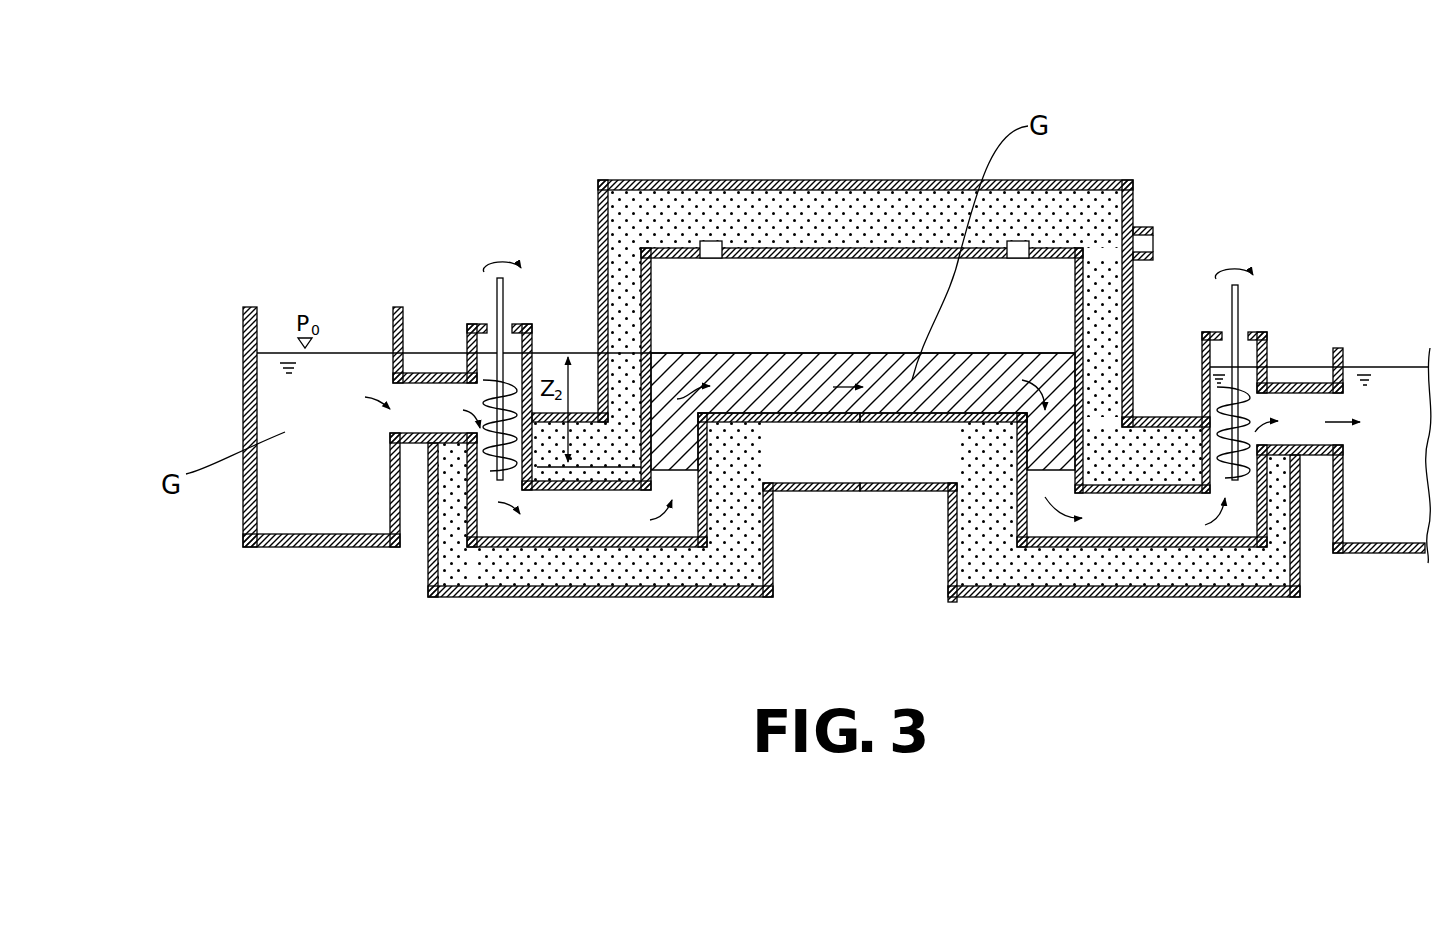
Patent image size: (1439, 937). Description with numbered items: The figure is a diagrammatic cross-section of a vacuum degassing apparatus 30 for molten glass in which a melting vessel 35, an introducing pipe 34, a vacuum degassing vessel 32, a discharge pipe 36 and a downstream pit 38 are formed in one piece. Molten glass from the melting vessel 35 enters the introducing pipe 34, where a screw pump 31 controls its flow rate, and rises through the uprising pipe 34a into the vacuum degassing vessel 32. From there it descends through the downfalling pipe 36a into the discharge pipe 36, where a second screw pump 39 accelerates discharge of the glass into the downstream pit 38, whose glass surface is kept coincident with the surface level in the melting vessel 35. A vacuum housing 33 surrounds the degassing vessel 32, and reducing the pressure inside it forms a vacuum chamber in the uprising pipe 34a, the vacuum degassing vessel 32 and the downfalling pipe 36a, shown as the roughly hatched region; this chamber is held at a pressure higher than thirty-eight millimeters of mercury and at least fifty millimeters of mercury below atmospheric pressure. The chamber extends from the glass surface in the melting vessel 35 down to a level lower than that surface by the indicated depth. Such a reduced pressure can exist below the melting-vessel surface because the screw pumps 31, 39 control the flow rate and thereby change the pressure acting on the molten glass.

The vacuum degassing apparatus 30 is at (867, 251).
The screw pump 31 is at (496, 458).
The vacuum degassing vessel 32 is at (822, 247).
The vacuum housing 33 is at (917, 181).
The introducing pipe 34 is at (607, 609).
The uprising pipe 34a is at (712, 503).
The melting vessel 35 is at (400, 322).
The discharge pipe 36 is at (1142, 610).
The downfalling pipe 36a is at (1005, 500).
The downstream pit 38 is at (1345, 357).
The screw pump 39 is at (1250, 477).